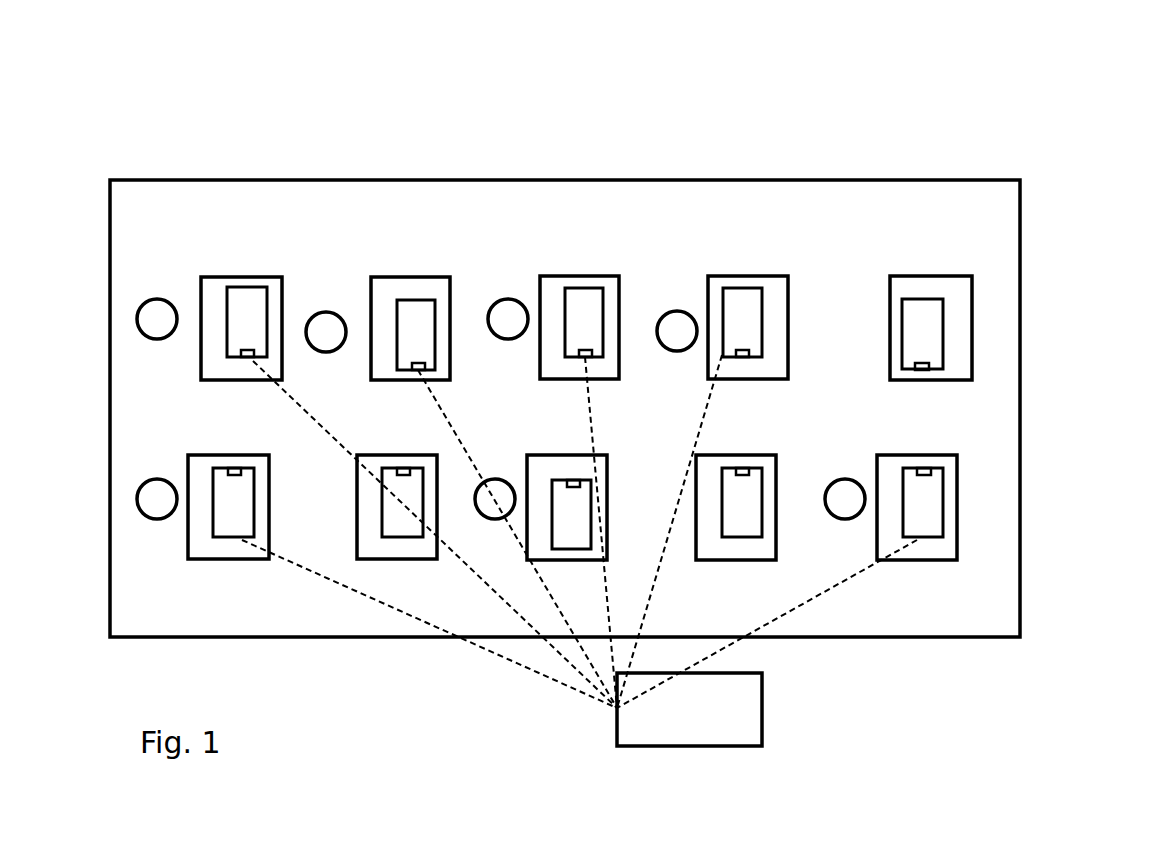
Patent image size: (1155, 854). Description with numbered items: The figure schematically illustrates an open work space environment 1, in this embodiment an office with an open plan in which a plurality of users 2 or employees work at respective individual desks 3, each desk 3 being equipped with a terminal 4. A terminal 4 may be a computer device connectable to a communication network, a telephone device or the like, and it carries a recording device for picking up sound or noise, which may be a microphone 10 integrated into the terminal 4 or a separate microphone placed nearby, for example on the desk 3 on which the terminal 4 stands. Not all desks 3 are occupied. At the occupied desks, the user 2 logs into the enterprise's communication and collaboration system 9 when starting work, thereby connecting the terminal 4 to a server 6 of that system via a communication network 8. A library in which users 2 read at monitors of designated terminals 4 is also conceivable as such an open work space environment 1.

The open work space environment 1 is at (652, 157).
The user 2 is at (679, 297).
The desk 3 is at (778, 263).
The terminal 4 is at (772, 315).
The server 6 is at (777, 723).
The communication network 8 is at (467, 673).
The communication and collaboration system 9 is at (534, 719).
The microphone 10 is at (757, 361).